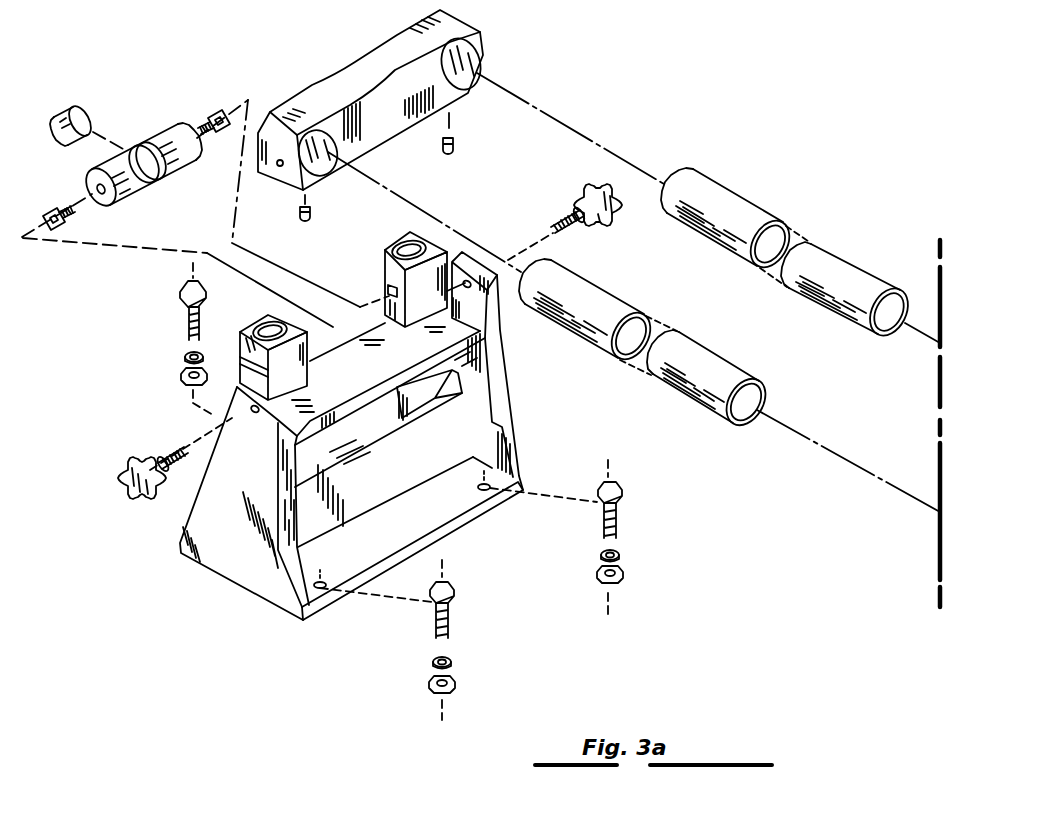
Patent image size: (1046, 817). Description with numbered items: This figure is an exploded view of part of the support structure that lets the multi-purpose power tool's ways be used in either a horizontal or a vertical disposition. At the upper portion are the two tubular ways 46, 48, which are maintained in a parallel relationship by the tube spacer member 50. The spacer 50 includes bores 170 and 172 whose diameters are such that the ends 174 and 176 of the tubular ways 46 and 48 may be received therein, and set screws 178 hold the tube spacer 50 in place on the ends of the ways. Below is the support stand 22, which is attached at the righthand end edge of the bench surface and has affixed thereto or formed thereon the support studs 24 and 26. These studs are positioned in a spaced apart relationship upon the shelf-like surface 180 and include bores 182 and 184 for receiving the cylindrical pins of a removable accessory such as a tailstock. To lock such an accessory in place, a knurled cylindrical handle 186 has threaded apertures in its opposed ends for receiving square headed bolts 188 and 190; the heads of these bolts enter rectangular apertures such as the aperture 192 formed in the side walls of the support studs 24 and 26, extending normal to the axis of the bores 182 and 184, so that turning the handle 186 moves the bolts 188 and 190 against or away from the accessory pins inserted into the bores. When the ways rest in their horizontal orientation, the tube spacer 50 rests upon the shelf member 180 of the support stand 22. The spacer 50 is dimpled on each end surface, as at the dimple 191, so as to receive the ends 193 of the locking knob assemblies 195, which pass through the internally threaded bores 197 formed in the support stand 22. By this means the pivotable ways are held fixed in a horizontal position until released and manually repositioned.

The support stand 22 is at (245, 562).
The support stud 24 is at (305, 381).
The support stud 26 is at (450, 298).
The tubular way 46 is at (622, 306).
The tubular way 48 is at (768, 214).
The tube spacer member 50 is at (384, 107).
The bore 170 is at (473, 60).
The bore 172 is at (330, 152).
The end of tubular way 174 is at (542, 268).
The end of tubular way 176 is at (685, 172).
The set screw 178 is at (456, 147).
The shelf-like surface 180 is at (373, 384).
The bore 182 is at (268, 326).
The bore 184 is at (398, 243).
The knurled cylindrical handle 186 is at (158, 137).
The square headed bolt 188 is at (52, 208).
The square headed bolt 190 is at (219, 112).
The dimple 191 is at (276, 170).
The rectangular aperture 192 is at (386, 289).
The end of locking knob assembly 193 is at (553, 229).
The locking knob assembly 195 is at (578, 190).
The internally threaded bore 197 is at (257, 415).